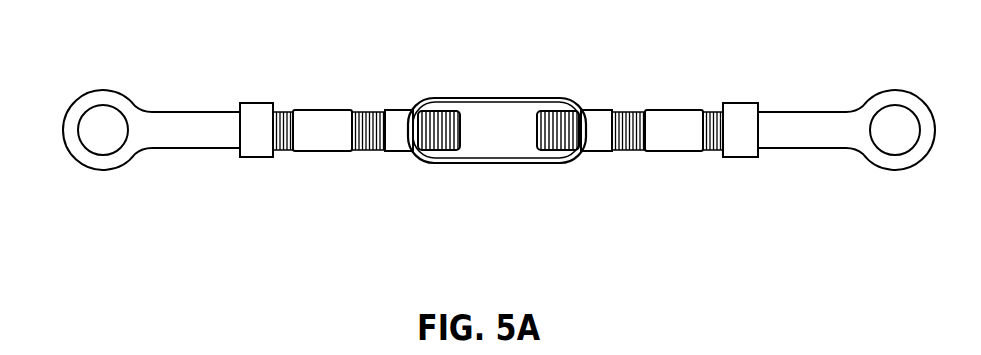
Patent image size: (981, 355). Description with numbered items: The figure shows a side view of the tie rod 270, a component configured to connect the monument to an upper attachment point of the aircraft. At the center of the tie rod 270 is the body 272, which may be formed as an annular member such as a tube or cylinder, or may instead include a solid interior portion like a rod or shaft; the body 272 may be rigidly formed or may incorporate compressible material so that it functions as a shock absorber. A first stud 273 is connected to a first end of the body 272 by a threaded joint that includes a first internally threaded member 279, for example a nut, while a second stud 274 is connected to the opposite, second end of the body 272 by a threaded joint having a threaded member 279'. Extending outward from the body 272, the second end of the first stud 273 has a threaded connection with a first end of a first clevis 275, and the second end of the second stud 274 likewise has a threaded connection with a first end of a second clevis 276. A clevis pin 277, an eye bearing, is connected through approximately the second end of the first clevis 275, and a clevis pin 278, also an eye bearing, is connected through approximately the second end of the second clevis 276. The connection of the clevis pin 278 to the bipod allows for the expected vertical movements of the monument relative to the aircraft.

The tie rod 270 is at (180, 58).
The body 272 is at (503, 164).
The first stud 273 is at (318, 151).
The second stud 274 is at (685, 151).
The first clevis 275 is at (213, 150).
The second clevis 276 is at (820, 150).
The clevis pin 277 is at (104, 157).
The clevis pin 278 is at (895, 157).
The first internally threaded member 279 is at (371, 169).
The threaded member 279' is at (571, 169).